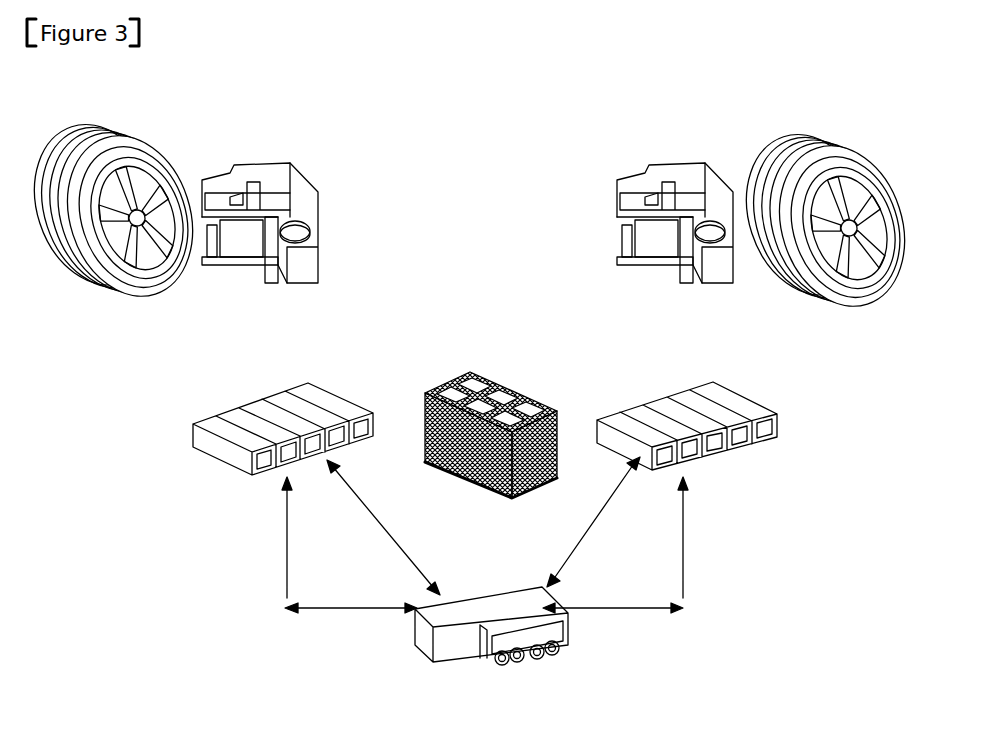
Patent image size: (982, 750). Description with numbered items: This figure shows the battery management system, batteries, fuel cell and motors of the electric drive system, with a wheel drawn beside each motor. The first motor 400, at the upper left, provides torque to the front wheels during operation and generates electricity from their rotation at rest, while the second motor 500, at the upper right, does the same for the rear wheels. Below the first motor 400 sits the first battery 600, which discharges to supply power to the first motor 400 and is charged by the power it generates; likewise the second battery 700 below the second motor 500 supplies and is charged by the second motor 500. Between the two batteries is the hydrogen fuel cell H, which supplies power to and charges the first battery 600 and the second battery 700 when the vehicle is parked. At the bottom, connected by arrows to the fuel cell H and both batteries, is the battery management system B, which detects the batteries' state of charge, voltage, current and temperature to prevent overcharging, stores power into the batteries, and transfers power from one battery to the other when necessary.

The first motor 400 is at (281, 392).
The second motor 500 is at (685, 390).
The first battery 600 is at (230, 414).
The second battery 700 is at (792, 410).
The hydrogen fuel cell H is at (492, 598).
The battery management system B is at (491, 653).